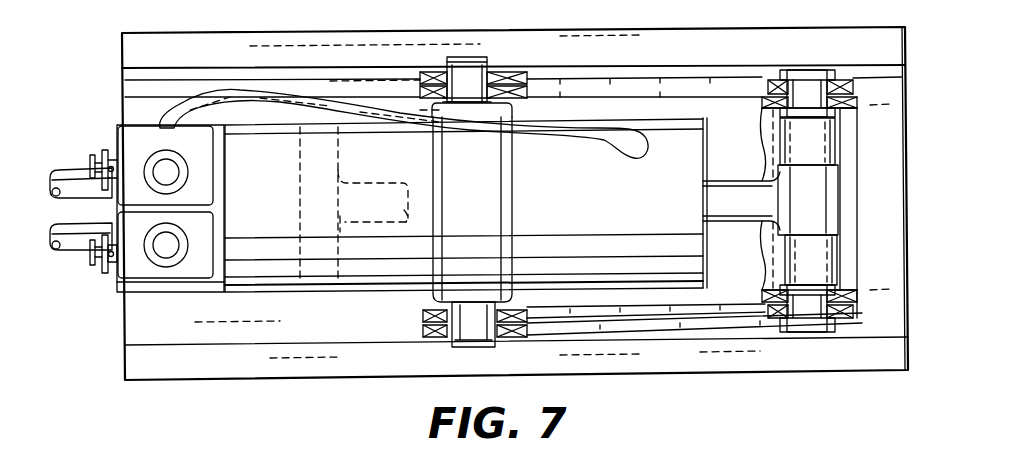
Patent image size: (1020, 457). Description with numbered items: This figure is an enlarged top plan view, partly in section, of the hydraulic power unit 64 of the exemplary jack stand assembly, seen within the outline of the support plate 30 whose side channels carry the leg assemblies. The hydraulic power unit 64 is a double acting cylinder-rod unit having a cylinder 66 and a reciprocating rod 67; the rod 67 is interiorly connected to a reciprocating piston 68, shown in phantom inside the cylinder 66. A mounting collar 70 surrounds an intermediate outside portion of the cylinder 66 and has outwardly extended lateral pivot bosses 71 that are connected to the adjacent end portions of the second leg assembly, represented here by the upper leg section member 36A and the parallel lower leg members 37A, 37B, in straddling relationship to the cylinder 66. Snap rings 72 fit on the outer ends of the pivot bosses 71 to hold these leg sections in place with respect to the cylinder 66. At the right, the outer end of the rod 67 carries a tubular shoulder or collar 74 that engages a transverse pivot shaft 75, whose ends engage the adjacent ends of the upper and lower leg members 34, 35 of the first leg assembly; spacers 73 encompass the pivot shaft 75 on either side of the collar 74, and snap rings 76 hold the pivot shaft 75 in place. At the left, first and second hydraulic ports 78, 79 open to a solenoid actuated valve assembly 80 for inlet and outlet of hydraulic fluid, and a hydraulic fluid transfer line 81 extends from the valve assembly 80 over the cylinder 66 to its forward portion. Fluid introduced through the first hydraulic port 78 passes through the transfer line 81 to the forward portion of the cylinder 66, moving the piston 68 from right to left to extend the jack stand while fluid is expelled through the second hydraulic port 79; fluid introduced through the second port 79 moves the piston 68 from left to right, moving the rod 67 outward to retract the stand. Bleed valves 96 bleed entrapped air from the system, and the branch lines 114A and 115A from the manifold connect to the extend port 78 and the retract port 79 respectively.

The support plate 30 is at (260, 367).
The upper leg member 34 is at (845, 132).
The lower leg member 35 is at (857, 312).
The upper leg section member 36A is at (423, 313).
The lower leg member 37A is at (437, 343).
The lower leg member 37B is at (418, 88).
The hydraulic power unit 64 is at (305, 310).
The cylinder 66 is at (283, 272).
The reciprocating rod 67 is at (372, 234).
The piston 68 is at (298, 183).
The mounting collar 70 is at (490, 206).
The pivot bosses 71 is at (503, 68).
The snap rings 72 is at (494, 67).
The spacers 73 is at (820, 145).
The collar 74 is at (827, 198).
The pivot shaft 75 is at (835, 238).
The snap rings 76 is at (833, 77).
The first hydraulic port 78 is at (103, 190).
The second hydraulic port 79 is at (90, 250).
The solenoid actuated valve assembly 80 is at (125, 143).
The hydraulic fluid transfer line 81 is at (274, 100).
The bleed valves 96 is at (100, 267).
The first hydraulic line branch 114A is at (73, 170).
The second hydraulic line branch 115A is at (70, 256).